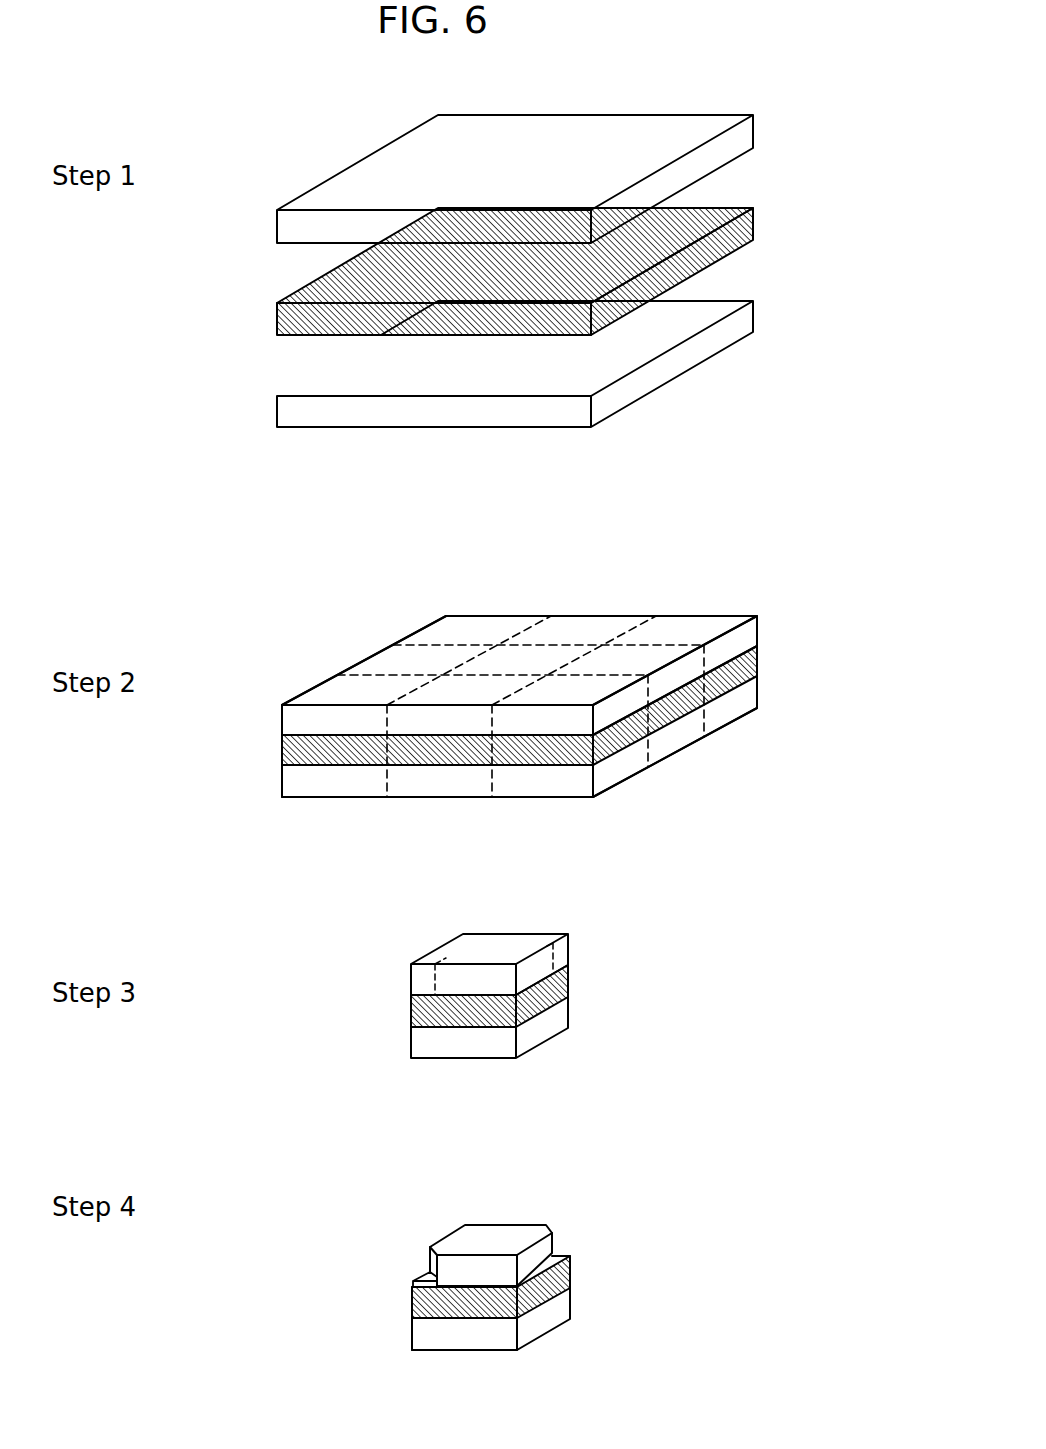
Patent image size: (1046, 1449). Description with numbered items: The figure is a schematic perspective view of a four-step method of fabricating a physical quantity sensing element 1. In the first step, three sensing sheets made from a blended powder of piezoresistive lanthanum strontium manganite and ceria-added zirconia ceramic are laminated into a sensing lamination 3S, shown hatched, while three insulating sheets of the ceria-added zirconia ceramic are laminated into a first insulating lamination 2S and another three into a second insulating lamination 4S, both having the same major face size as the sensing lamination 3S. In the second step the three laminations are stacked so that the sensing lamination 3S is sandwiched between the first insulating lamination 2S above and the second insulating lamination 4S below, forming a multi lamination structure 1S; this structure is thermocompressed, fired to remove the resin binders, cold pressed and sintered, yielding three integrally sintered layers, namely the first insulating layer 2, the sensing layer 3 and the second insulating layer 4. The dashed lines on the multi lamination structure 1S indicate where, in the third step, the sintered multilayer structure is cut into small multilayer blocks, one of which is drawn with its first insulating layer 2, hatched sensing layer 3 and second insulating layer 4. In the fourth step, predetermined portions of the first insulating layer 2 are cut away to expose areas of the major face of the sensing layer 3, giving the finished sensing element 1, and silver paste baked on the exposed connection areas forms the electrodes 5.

The multi lamination structure 1S is at (754, 569).
The first insulating lamination 2S is at (753, 128).
The sensing lamination 3S is at (753, 224).
The second insulating lamination 4S is at (753, 318).
The physical quantity sensing element 1 is at (603, 1229).
The first insulating layer 2 is at (503, 945).
The sensing layer 3 is at (570, 983).
The second insulating layer 4 is at (562, 1015).
The electrodes 5 is at (418, 1281).